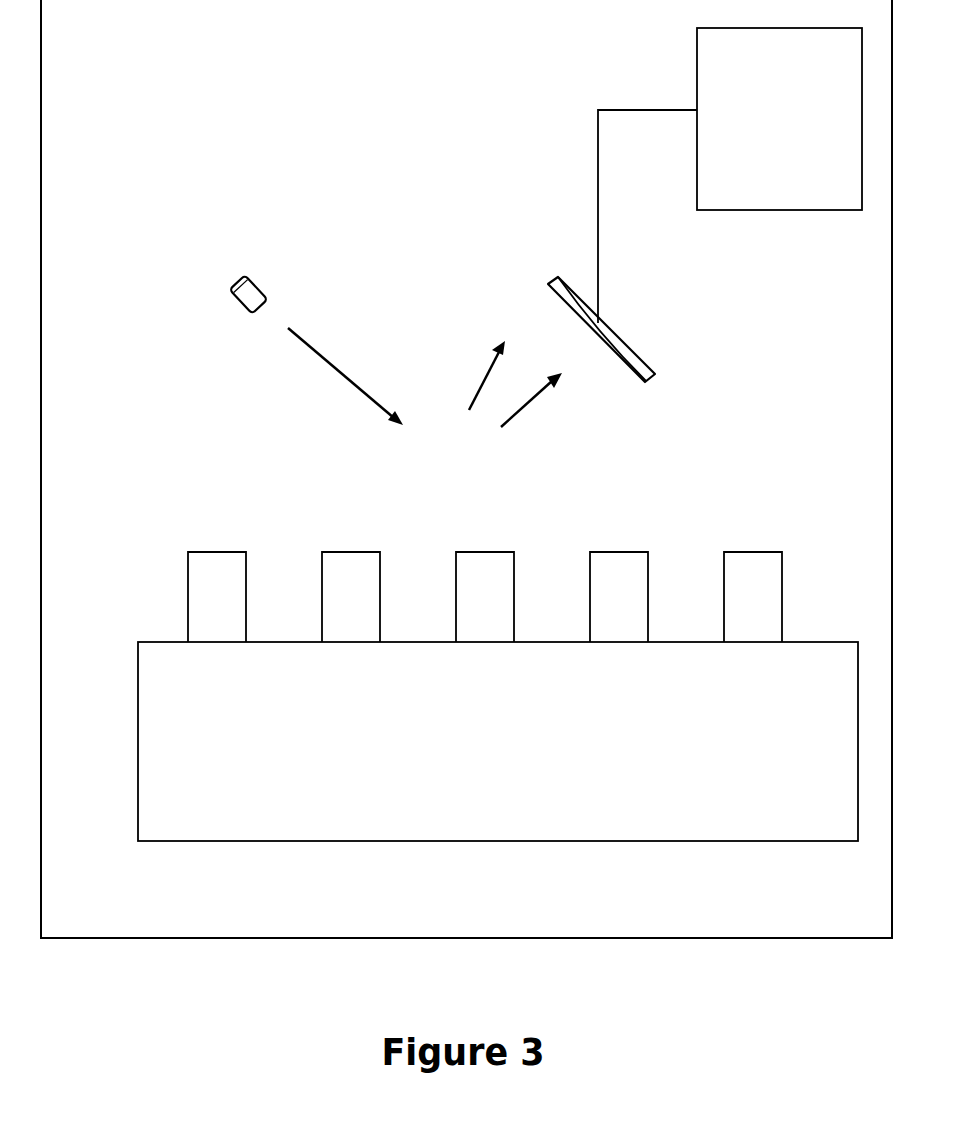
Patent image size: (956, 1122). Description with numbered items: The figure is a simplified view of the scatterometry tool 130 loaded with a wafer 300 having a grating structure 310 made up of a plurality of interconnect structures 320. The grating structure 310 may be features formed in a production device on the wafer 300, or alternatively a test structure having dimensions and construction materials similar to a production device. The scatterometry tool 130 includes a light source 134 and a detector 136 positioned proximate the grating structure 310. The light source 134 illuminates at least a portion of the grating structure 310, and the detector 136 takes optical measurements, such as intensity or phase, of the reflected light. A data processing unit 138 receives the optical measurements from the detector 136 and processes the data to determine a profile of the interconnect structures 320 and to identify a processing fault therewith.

The scatterometry tool 130 is at (884, 920).
The light source 134 is at (253, 297).
The detector 136 is at (630, 349).
The data processing unit 138 is at (759, 179).
The wafer 300 is at (160, 678).
The grating structure 310 is at (211, 470).
The interconnect structures 320 is at (188, 597).